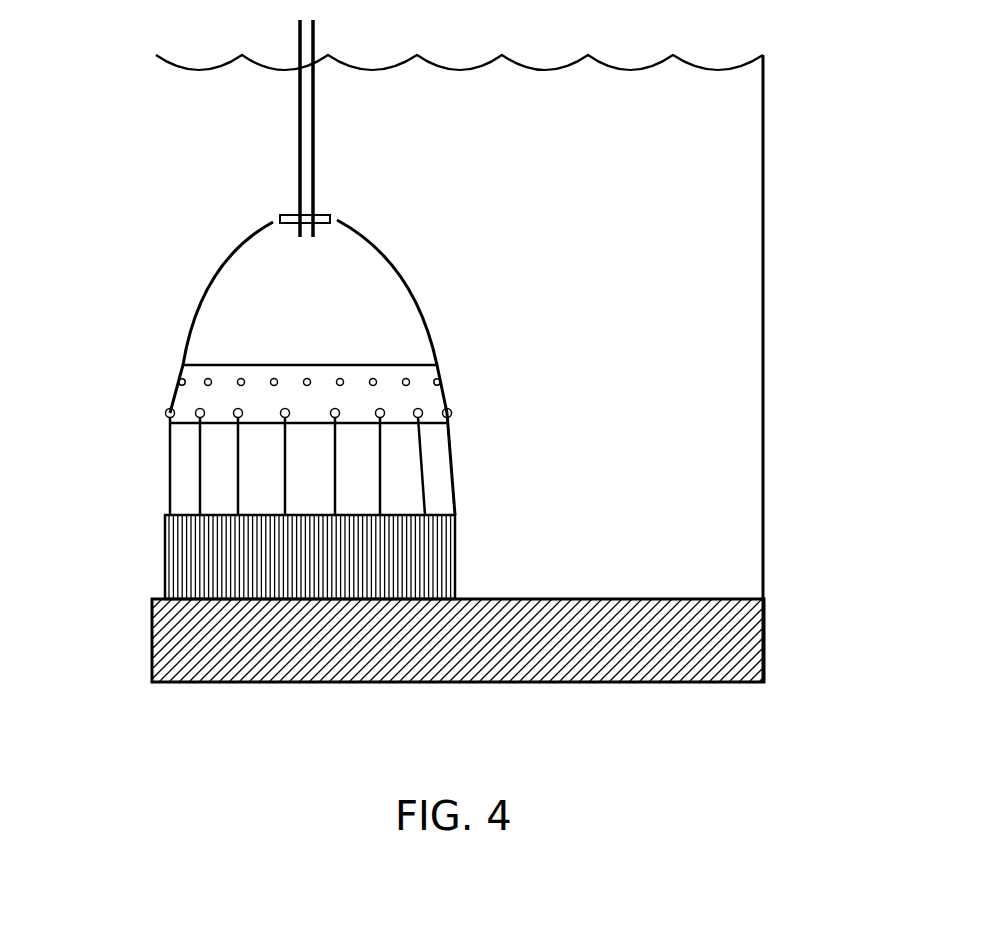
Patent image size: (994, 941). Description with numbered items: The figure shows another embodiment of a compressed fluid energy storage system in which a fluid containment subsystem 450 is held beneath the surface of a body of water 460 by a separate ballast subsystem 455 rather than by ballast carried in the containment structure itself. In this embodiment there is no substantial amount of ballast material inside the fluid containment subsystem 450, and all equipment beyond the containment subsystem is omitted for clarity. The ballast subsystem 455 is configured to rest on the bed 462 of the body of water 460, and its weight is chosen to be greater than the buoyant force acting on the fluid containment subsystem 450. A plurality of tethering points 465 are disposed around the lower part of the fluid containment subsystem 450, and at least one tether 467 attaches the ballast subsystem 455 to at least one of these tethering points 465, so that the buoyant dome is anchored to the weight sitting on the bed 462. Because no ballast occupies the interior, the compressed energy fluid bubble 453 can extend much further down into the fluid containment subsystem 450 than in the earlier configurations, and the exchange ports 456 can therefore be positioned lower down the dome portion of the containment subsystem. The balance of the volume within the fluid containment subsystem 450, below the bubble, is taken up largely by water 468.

The fluid containment subsystem 450 is at (403, 280).
The compressed energy fluid bubble 453 is at (338, 307).
The ballast subsystem 455 is at (423, 572).
The exchange ports 456 is at (440, 368).
The body of water 460 is at (730, 355).
The bed 462 is at (627, 618).
The tethering points 465 is at (448, 413).
The tether 467 is at (450, 472).
The water 468 is at (267, 412).